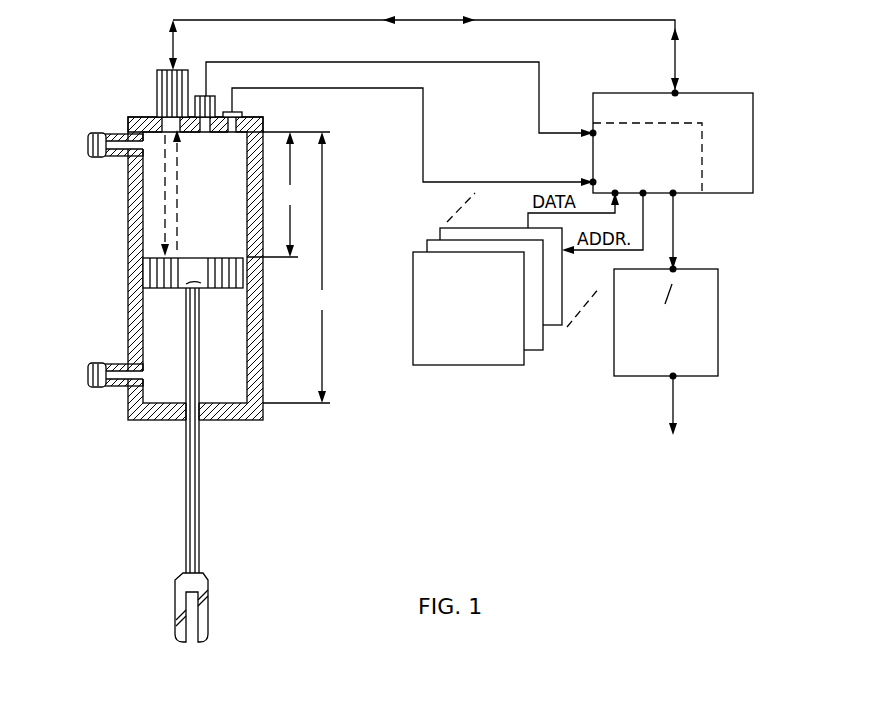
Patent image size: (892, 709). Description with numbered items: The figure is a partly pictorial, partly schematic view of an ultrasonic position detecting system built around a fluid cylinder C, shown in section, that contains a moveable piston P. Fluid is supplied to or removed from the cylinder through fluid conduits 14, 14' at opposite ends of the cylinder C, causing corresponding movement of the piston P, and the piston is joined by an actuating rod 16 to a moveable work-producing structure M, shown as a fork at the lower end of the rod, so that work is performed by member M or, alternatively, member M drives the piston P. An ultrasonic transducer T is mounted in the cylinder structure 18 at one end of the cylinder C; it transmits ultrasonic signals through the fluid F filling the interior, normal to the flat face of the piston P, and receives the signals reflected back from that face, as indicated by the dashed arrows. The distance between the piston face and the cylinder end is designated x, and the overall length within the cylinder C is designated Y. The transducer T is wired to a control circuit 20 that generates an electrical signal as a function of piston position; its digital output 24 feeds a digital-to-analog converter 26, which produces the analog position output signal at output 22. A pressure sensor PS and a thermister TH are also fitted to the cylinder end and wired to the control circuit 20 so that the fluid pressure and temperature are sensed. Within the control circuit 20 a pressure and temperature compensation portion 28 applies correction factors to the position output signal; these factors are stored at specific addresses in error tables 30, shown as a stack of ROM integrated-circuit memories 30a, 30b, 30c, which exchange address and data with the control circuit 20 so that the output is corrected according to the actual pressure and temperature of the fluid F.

The fluid conduit 14 is at (87, 390).
The fluid conduit 14' is at (87, 160).
The actuating rod 16 is at (199, 458).
The cylinder structure 18 is at (150, 117).
The control circuit 20 is at (718, 93).
The output 22 is at (673, 403).
The output of control circuit 24 is at (673, 230).
The digital-to-analog converter 26 is at (718, 297).
The temperature compensation portion 28 is at (702, 155).
The error tables 30 is at (475, 330).
The error table 30a is at (518, 365).
The error table 30b is at (537, 350).
The error table 30c is at (562, 325).
The fluid cylinder C is at (130, 227).
The fluid F is at (214, 211).
The moveable structure M is at (208, 588).
The piston P is at (193, 273).
The pressure sensor PS is at (208, 96).
The ultrasonic transducer T is at (157, 72).
The thermister TH is at (240, 112).
The distance between piston face and cylinder end x is at (288, 267).
The overall length within cylinder Y is at (320, 267).